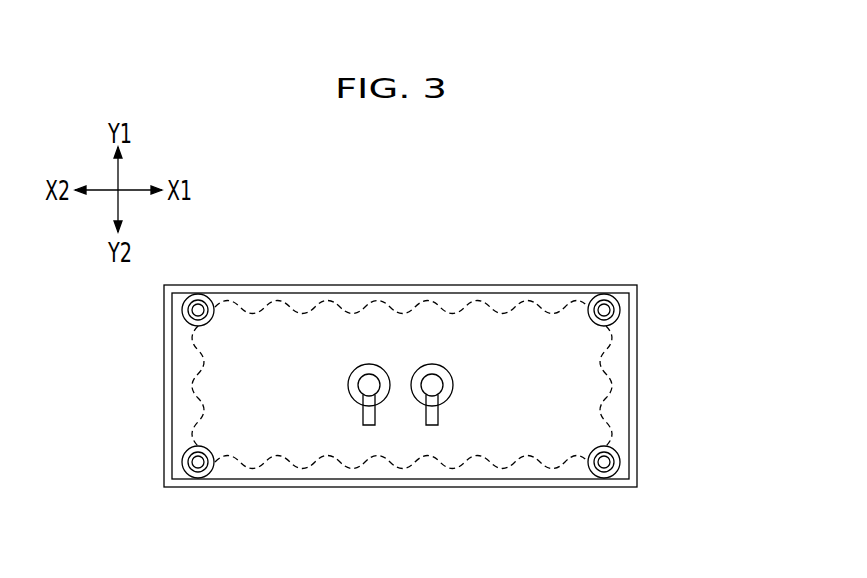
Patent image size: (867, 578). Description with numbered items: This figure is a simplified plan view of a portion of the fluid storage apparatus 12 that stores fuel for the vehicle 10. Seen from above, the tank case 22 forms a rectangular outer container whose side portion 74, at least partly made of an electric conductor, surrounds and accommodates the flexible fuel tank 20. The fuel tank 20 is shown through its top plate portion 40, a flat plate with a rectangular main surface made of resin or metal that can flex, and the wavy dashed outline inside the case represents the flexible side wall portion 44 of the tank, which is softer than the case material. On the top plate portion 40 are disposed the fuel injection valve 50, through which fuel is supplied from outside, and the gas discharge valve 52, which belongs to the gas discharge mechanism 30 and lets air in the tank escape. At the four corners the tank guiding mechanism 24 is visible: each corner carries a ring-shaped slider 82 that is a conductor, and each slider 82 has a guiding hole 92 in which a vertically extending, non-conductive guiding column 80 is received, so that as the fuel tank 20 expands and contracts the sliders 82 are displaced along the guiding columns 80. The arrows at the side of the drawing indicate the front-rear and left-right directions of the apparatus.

The vehicle 10 is at (552, 184).
The fluid storage apparatus 12 is at (248, 270).
The flexible fuel tank 20 is at (473, 236).
The top plate portion 40 is at (408, 323).
The side wall portion 44 is at (455, 313).
The tank case 22 is at (634, 386).
The side portion 74 is at (400, 386).
The tank guiding mechanism 24 is at (687, 278).
The guiding column 80 is at (614, 306).
The slider 82 is at (609, 312).
The guiding hole 92 is at (604, 294).
The gas discharge mechanism 30 is at (464, 404).
The fuel injection valve 50 is at (348, 378).
The gas discharge valve 52 is at (453, 378).